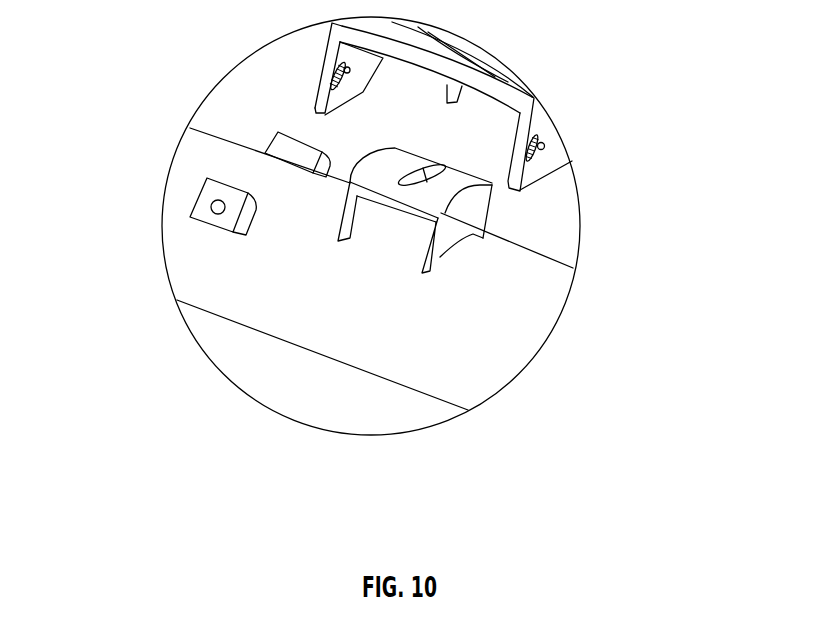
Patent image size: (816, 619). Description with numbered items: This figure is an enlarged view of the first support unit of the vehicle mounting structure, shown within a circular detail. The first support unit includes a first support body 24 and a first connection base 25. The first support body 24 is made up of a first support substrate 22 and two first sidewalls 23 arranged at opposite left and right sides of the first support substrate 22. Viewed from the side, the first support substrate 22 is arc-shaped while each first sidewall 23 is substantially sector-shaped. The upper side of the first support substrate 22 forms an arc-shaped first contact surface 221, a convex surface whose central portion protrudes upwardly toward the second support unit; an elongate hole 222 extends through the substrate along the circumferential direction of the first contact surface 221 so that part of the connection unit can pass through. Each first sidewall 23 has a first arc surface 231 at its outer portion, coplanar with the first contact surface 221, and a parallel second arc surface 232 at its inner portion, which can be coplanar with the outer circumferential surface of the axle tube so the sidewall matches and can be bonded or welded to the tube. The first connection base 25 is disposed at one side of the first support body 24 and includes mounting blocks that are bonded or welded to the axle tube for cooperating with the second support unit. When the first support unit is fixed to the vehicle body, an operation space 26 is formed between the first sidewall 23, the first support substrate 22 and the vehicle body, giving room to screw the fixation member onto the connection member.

The first support substrate 22 is at (494, 111).
The first contact surface 221 is at (363, 226).
The elongate hole 222 is at (425, 183).
The first sidewall 23 is at (559, 311).
The first arc surface 231 is at (484, 242).
The second arc surface 232 is at (442, 257).
The first support body 24 is at (424, 218).
The first connection base 25 is at (200, 210).
The operation space 26 is at (392, 245).